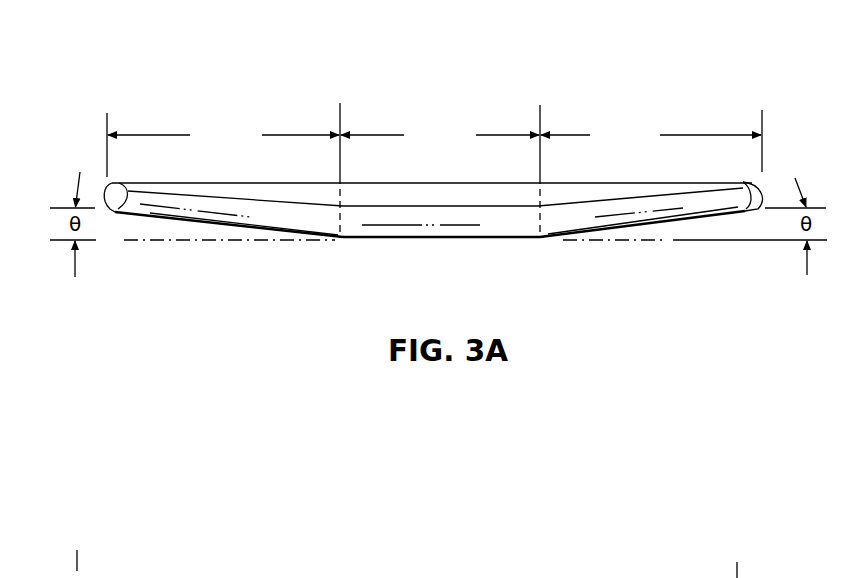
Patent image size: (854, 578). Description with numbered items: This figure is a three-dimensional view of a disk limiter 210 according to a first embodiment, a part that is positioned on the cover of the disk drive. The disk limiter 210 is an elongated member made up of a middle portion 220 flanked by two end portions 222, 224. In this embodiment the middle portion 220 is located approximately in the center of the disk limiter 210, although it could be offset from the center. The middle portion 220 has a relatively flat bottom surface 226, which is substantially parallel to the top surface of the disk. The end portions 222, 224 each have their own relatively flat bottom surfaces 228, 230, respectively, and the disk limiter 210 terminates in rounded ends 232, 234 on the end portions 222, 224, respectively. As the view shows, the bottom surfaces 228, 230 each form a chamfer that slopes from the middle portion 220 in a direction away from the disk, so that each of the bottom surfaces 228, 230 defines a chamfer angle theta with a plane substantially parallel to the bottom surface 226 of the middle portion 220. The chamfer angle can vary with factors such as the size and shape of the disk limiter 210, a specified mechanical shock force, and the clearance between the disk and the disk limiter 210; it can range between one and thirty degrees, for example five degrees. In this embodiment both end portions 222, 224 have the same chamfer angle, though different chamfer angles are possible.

The disk limiter 210 is at (445, 158).
The middle portion 220 is at (440, 171).
The end portion 222 is at (223, 140).
The end portion 224 is at (651, 141).
The bottom surface 226 is at (440, 240).
The bottom surface 228 is at (228, 227).
The bottom surface 230 is at (670, 228).
The rounded end 232 is at (103, 203).
The rounded end 234 is at (767, 203).